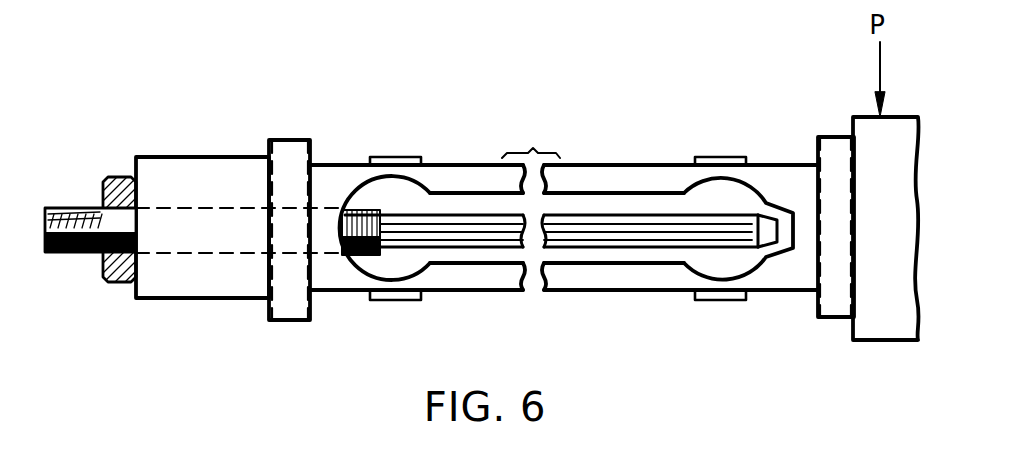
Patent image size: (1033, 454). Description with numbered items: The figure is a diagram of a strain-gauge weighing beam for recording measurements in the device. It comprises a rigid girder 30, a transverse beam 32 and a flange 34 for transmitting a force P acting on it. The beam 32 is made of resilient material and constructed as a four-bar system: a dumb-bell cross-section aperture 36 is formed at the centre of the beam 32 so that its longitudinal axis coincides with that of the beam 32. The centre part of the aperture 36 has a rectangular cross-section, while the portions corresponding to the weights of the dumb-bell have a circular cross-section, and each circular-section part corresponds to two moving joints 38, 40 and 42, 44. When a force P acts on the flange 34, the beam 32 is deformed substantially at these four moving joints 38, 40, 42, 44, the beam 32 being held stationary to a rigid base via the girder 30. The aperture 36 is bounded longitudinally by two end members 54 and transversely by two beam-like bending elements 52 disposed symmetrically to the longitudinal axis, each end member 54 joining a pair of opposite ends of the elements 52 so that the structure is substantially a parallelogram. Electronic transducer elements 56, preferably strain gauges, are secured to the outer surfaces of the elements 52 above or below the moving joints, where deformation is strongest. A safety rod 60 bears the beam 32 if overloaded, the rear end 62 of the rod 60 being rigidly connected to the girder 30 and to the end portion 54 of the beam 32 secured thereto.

The rigid girder 30 is at (188, 177).
The transverse beam 32 is at (487, 180).
The flange 34 is at (868, 132).
The dumb-bell cross-section aperture 36 is at (570, 208).
The moving joint 38 is at (372, 190).
The moving joint 40 is at (422, 263).
The moving joint 42 is at (735, 203).
The moving joint 44 is at (725, 263).
The beam-like bending element 52 is at (633, 182).
The end member 54 is at (338, 280).
The electronic transducer element 56 is at (393, 157).
The safety rod 60 is at (594, 243).
The rear end 62 is at (78, 223).